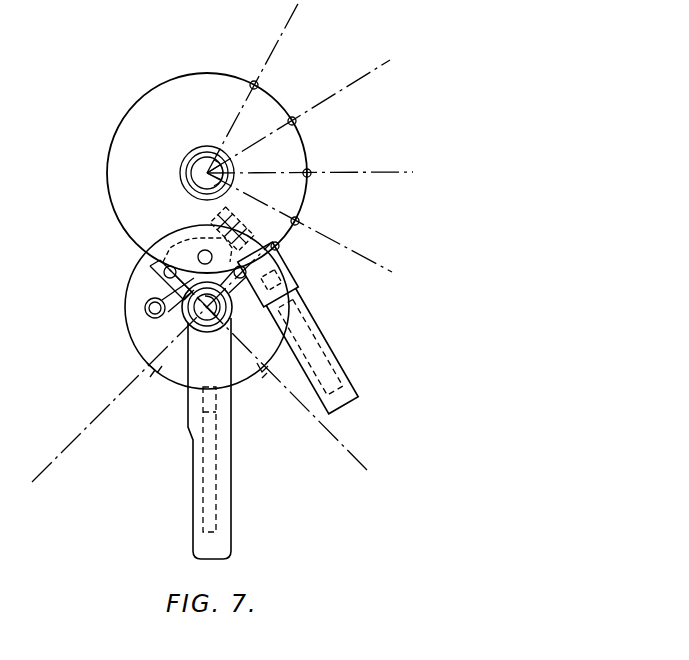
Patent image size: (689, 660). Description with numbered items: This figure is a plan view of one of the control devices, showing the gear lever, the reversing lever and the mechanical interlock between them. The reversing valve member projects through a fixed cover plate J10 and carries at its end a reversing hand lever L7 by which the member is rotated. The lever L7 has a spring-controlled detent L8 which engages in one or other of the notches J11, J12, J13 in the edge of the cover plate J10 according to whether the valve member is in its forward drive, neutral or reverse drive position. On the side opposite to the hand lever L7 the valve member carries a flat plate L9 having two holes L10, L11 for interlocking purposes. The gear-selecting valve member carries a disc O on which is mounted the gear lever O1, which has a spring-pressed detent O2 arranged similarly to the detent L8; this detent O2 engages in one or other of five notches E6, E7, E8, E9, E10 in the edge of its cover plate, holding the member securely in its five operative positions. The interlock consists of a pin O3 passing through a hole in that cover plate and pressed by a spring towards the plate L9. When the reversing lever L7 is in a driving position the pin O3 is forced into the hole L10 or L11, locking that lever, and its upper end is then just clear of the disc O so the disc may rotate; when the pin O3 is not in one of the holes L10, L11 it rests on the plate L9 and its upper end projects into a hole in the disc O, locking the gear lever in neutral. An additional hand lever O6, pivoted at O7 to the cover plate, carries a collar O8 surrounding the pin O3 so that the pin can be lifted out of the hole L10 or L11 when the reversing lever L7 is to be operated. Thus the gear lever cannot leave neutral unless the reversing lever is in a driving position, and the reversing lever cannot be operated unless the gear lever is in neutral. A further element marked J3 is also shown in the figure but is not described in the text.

The disc O is at (135, 125).
The shaft J3 is at (25, 11).
The notch E10 is at (252, 85).
The notch E9 is at (286, 118).
The notch E8 is at (303, 165).
The notch E7 is at (298, 217).
The notch E6 is at (277, 242).
The gear lever O1 is at (340, 393).
The spring-pressed detent O2 is at (268, 268).
The interlocking pin O3 is at (190, 250).
The additional hand lever O6 is at (145, 309).
The pivot O7 is at (130, 203).
The collar O8 is at (197, 258).
The reversing hand lever L7 is at (200, 470).
The spring-controlled detent L8 is at (203, 400).
The flat plate L9 is at (187, 320).
The hole L10 is at (241, 280).
The hole L11 is at (160, 267).
The fixed cover plate J10 is at (149, 376).
The notch J11 is at (262, 373).
The notch J12 is at (232, 390).
The notch J13 is at (152, 363).